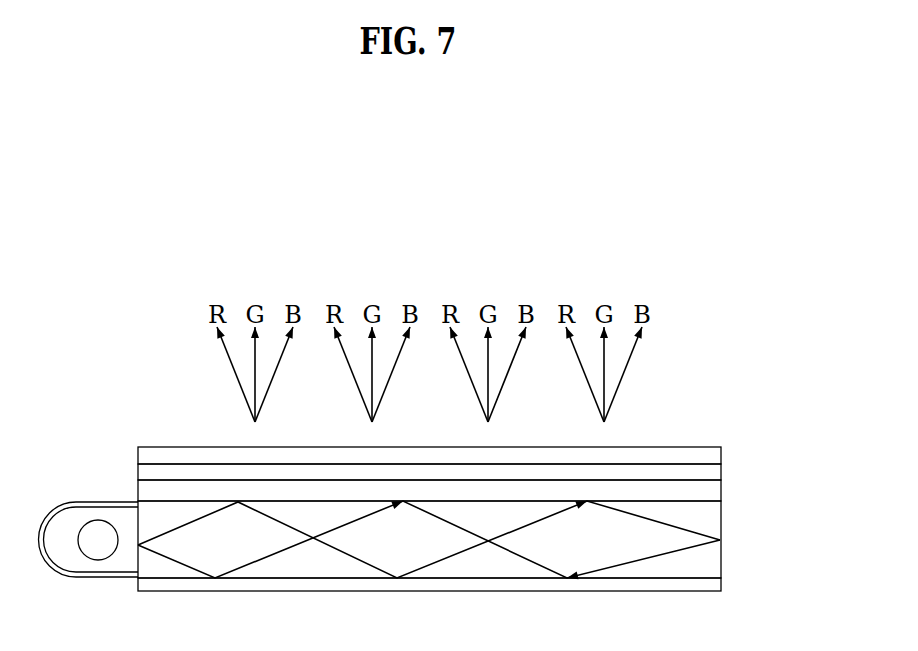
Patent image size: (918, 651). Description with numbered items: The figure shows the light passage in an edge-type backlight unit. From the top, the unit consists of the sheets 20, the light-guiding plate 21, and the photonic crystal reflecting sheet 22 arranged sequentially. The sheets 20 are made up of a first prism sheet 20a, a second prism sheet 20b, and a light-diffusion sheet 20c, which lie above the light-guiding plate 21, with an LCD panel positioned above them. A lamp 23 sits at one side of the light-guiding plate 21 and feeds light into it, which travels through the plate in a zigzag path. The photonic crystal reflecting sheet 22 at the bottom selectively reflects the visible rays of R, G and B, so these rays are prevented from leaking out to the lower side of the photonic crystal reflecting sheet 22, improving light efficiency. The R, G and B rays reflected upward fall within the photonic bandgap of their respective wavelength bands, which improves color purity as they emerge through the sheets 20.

The sheets 20 is at (492, 474).
The first prism sheet 20a is at (721, 455).
The second prism sheet 20b is at (721, 472).
The light-diffusion sheet 20c is at (721, 492).
The light-guiding plate 21 is at (718, 521).
The photonic crystal reflecting sheet 22 is at (718, 583).
The lamp 23 is at (99, 560).